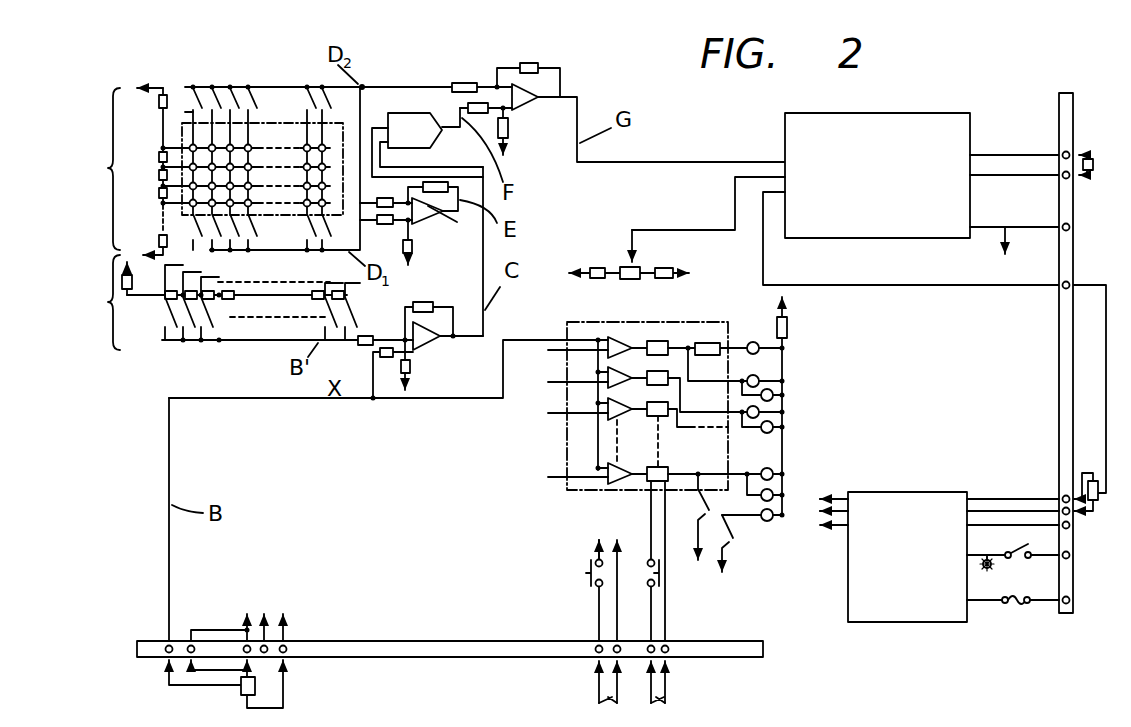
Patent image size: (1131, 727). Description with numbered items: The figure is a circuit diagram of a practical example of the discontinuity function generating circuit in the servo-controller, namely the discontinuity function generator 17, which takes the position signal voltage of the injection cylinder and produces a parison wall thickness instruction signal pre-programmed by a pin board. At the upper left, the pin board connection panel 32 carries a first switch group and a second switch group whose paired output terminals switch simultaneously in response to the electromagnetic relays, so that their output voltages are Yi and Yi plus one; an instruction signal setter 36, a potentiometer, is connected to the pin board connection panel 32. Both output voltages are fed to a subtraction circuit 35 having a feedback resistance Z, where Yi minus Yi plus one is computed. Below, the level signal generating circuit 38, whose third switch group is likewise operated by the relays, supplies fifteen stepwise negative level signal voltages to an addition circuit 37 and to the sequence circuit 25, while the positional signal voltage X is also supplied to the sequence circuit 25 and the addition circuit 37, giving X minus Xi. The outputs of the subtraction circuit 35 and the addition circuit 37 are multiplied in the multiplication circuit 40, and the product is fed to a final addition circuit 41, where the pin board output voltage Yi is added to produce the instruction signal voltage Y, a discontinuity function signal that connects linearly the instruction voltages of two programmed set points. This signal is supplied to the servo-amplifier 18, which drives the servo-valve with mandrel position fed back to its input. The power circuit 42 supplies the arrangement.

The discontinuity function generator 17 is at (441, 58).
The servo-amplifier 18 is at (852, 198).
The sequence circuit 25 is at (700, 322).
The pin board connection panel 32 is at (285, 122).
The subtraction circuit 35 is at (437, 218).
The instruction signal setter 36 is at (113, 171).
The addition circuit 37 is at (433, 340).
The level signal generating circuit 38 is at (210, 302).
The multiplication circuit 40 is at (434, 137).
The addition circuit 41 is at (527, 102).
The power circuit 42 is at (887, 571).